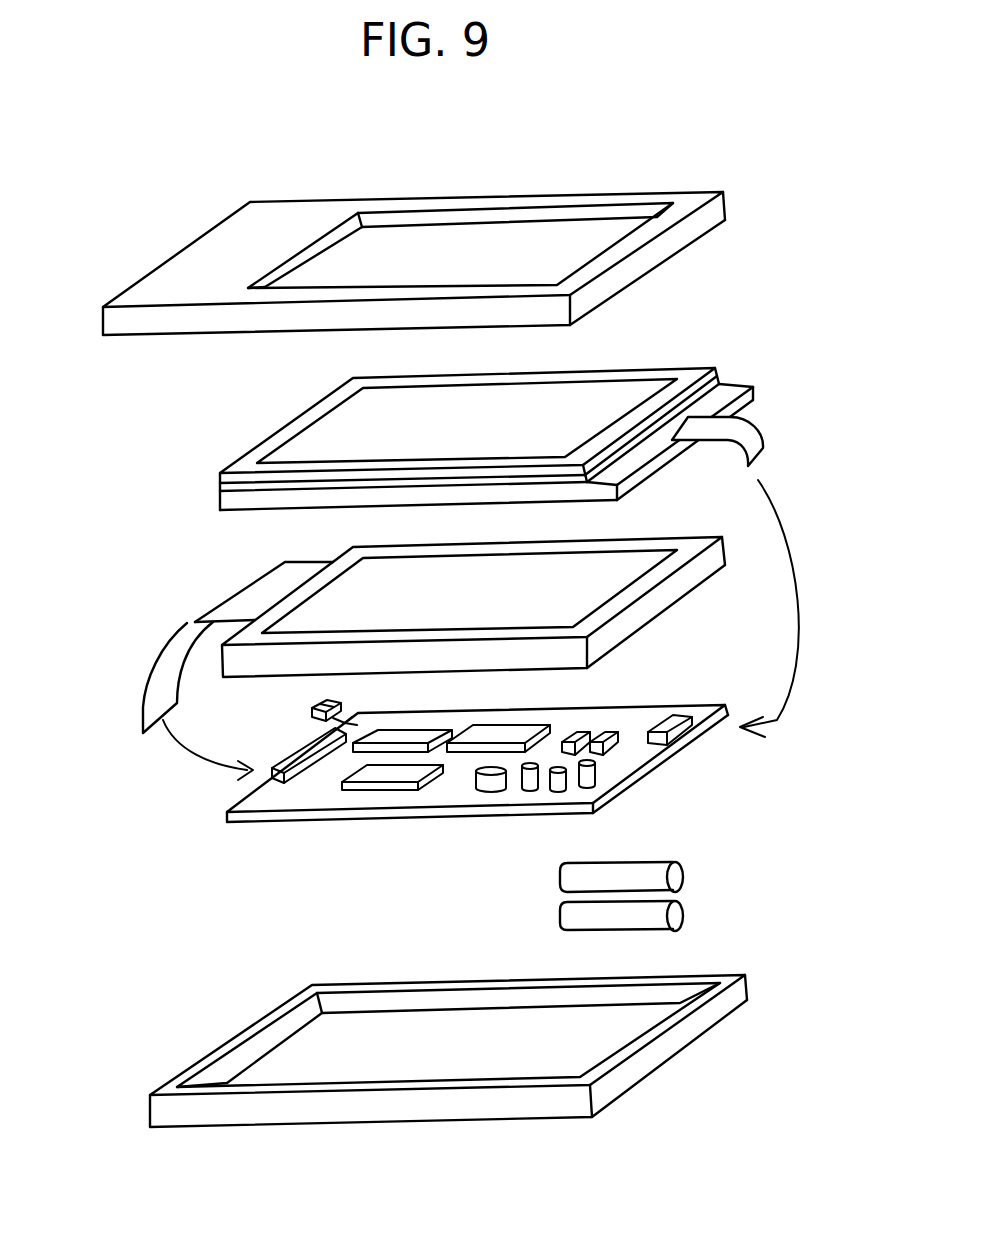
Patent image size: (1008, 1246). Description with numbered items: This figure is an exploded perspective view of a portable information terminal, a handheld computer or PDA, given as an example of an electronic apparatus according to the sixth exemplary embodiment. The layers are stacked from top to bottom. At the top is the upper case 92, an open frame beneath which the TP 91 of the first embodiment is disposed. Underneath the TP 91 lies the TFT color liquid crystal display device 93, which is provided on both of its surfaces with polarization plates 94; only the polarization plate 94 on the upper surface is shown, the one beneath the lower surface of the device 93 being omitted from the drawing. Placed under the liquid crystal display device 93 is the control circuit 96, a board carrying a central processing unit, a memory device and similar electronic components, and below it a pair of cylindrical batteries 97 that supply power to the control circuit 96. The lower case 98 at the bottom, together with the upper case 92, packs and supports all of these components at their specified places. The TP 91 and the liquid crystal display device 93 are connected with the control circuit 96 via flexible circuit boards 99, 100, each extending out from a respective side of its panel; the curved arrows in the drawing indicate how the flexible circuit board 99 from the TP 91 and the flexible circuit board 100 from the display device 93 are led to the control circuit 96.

The TP 91 is at (267, 438).
The upper case 92 is at (190, 246).
The TFT color liquid crystal display device 93 is at (700, 586).
The polarization plate 94 is at (340, 590).
The control circuit 96 is at (225, 812).
The battery 97 is at (717, 878).
The lower case 98 is at (240, 1036).
The flexible circuit board 99 is at (760, 433).
The flexible circuit board 100 is at (165, 652).